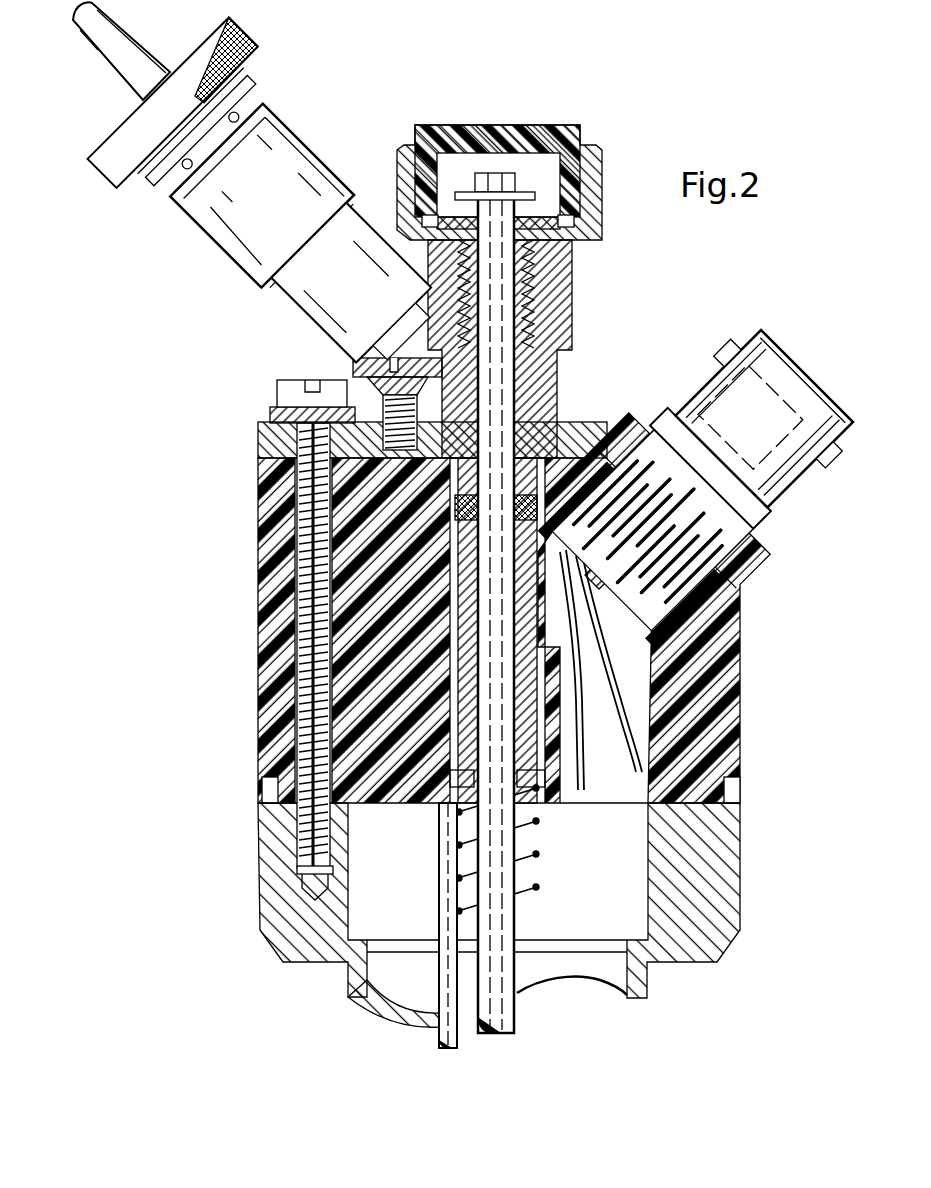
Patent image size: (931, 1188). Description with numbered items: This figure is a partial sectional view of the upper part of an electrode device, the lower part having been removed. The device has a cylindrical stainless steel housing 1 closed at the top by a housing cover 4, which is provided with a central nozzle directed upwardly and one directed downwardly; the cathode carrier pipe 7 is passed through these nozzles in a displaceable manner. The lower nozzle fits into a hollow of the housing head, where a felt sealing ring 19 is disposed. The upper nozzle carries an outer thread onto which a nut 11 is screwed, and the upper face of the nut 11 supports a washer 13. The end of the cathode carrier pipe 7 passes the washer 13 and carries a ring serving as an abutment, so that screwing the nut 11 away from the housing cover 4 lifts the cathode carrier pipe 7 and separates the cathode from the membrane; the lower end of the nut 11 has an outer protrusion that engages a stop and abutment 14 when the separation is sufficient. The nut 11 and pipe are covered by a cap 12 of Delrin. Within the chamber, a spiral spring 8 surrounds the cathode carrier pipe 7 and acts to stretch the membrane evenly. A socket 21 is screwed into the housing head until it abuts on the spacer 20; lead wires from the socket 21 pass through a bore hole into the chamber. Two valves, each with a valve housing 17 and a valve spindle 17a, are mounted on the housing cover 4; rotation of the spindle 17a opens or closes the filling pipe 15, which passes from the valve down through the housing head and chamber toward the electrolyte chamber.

The cylindrical housing 1 is at (735, 856).
The housing cover 4 is at (593, 437).
The cathode carrier pipe 7 is at (476, 183).
The spiral spring 8 is at (540, 853).
The nut 11 is at (568, 236).
The cap 12 is at (486, 124).
The washer 13 is at (546, 206).
The stop and abutment 14 is at (352, 366).
The filling pipe 15 is at (438, 1048).
The valve housing 17 is at (232, 182).
The valve spindle 17a is at (95, 172).
The sealing ring 19 is at (453, 524).
The spacer 20 is at (748, 574).
The socket 21 is at (806, 388).